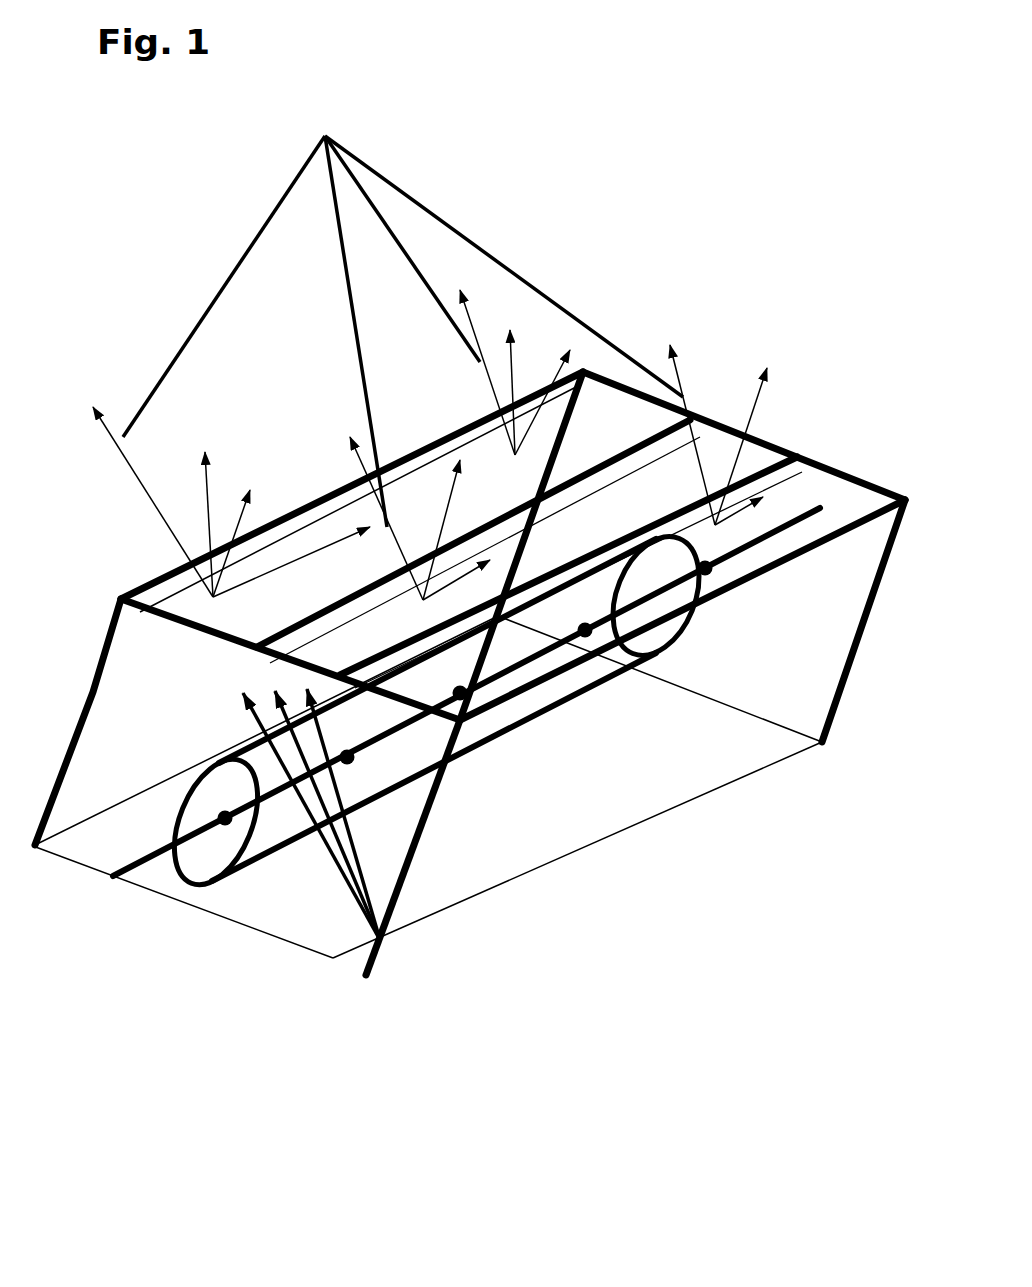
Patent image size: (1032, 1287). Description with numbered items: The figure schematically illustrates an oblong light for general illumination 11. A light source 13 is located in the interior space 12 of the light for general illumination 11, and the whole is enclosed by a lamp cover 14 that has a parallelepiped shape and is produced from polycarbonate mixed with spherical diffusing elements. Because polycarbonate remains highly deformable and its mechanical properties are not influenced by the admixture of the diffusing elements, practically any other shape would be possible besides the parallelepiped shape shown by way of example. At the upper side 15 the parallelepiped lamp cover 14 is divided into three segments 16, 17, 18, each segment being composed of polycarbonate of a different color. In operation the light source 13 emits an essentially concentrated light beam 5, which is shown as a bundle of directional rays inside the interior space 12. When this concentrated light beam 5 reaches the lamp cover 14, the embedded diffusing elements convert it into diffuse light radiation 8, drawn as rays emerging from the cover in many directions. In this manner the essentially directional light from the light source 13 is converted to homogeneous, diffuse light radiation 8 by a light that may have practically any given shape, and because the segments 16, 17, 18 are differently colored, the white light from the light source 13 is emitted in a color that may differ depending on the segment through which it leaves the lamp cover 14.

The concentrated light beam 5 is at (380, 940).
The diffuse light radiation 8 is at (403, 312).
The light for general illumination 11 is at (628, 960).
The interior space 12 is at (628, 716).
The light source 13 is at (249, 866).
The lamp cover 14 is at (92, 694).
The upper side 15 is at (293, 507).
The segment 16 is at (603, 382).
The segment 17 is at (714, 447).
The segment 18 is at (794, 485).